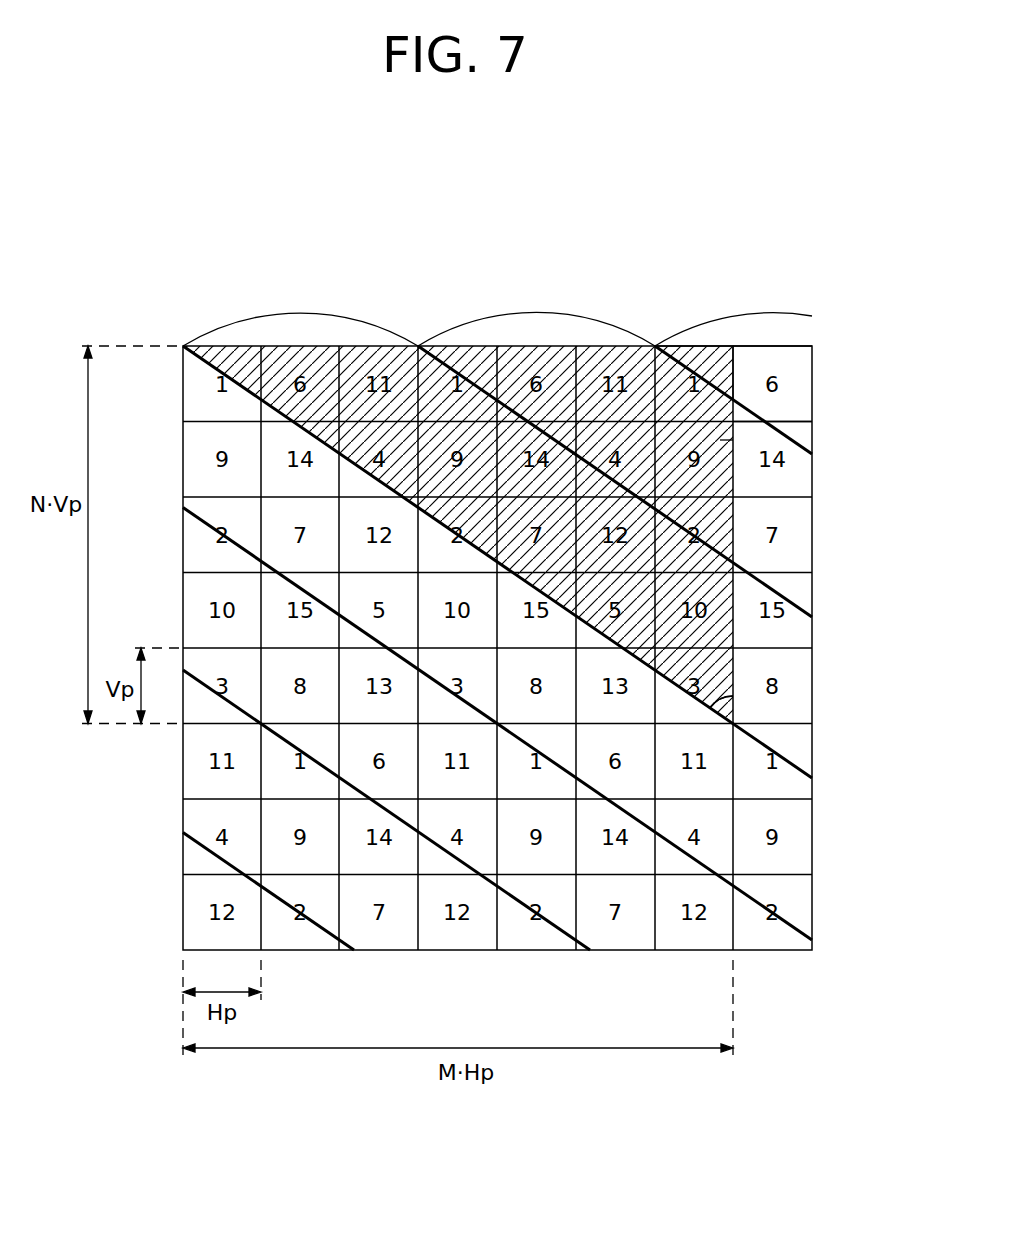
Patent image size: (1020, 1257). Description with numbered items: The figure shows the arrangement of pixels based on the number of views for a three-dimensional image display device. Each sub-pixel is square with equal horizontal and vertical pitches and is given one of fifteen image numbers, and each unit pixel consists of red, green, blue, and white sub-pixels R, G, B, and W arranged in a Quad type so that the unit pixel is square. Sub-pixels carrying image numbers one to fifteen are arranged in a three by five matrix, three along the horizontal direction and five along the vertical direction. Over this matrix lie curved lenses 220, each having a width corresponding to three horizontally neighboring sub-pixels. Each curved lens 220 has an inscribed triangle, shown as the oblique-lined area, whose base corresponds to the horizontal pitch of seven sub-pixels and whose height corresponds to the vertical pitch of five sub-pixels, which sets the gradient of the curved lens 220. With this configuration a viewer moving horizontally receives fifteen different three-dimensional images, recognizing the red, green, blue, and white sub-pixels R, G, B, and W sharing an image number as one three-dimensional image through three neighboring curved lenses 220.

The curved lens 220 is at (303, 318).
The red sub-pixel R is at (712, 360).
The green sub-pixel G is at (797, 364).
The white sub-pixel W is at (720, 441).
The blue sub-pixel B is at (798, 475).